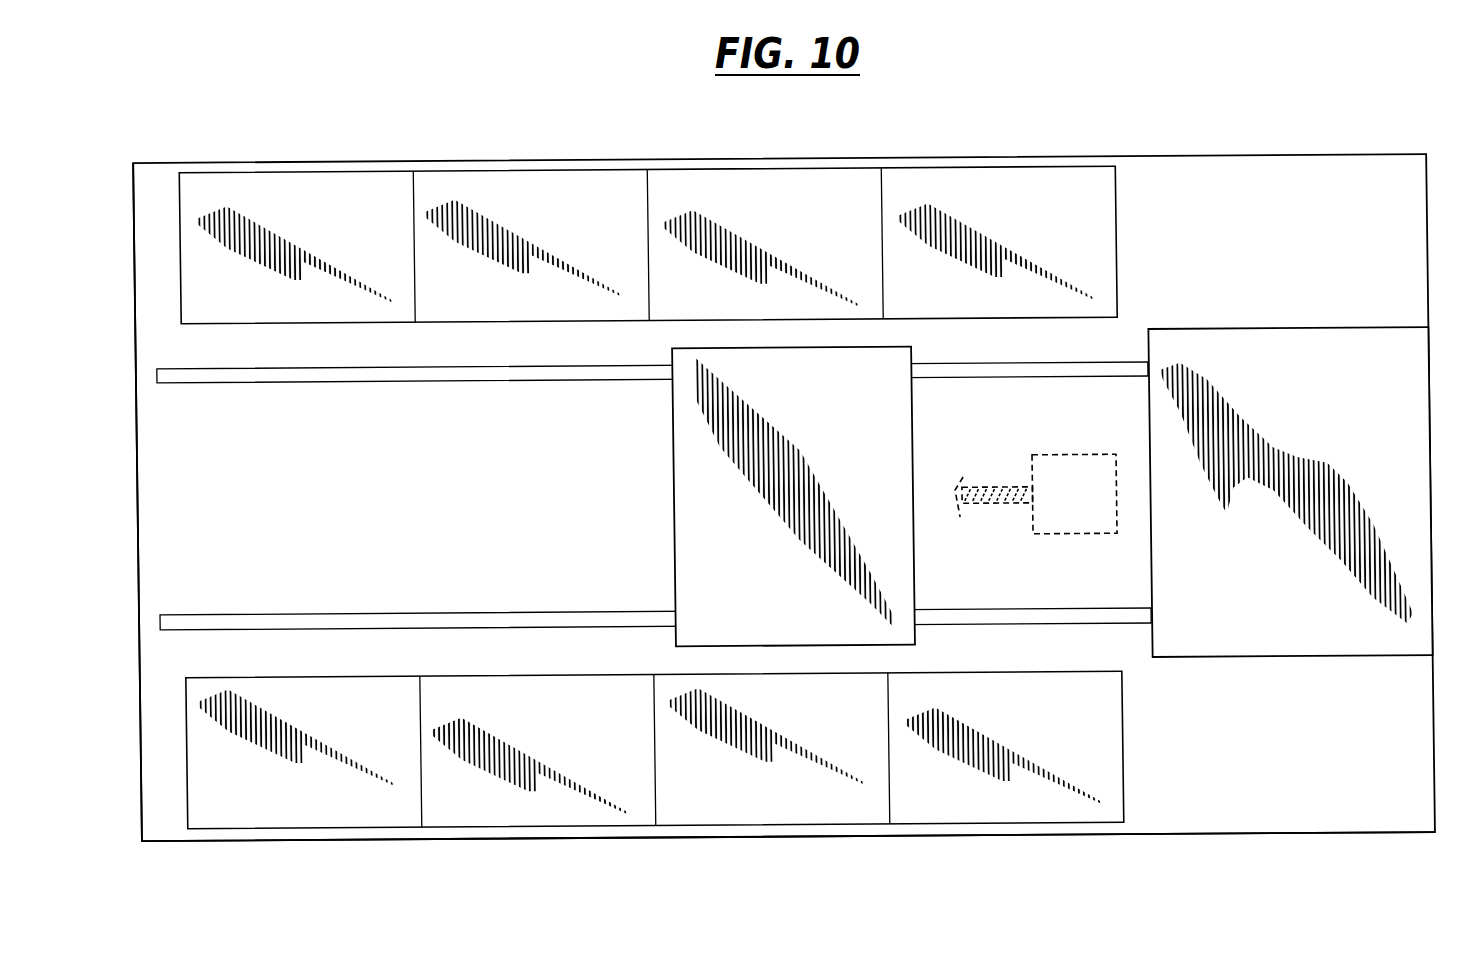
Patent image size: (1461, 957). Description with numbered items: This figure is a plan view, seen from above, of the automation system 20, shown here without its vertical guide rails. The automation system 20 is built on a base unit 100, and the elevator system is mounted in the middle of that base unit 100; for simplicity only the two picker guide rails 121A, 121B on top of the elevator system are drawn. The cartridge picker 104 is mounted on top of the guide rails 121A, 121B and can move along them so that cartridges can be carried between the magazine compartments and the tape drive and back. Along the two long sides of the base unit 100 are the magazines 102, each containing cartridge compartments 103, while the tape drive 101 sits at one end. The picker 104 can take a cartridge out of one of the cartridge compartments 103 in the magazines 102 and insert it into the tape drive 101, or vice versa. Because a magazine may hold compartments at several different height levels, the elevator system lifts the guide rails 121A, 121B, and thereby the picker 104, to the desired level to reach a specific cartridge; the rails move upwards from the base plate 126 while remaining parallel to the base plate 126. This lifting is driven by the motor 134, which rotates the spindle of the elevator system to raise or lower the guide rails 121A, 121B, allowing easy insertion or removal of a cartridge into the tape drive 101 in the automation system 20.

The automation system 20 is at (121, 265).
The base unit 100 is at (128, 450).
The tape drive 101 is at (1337, 365).
The magazine 102 is at (1118, 235).
The cartridge compartment 103 is at (313, 196).
The cartridge picker 104 is at (700, 488).
The picker guide rail 121A is at (333, 620).
The picker guide rail 121B is at (342, 375).
The base plate 126 is at (1292, 802).
The motor 134 is at (1073, 475).